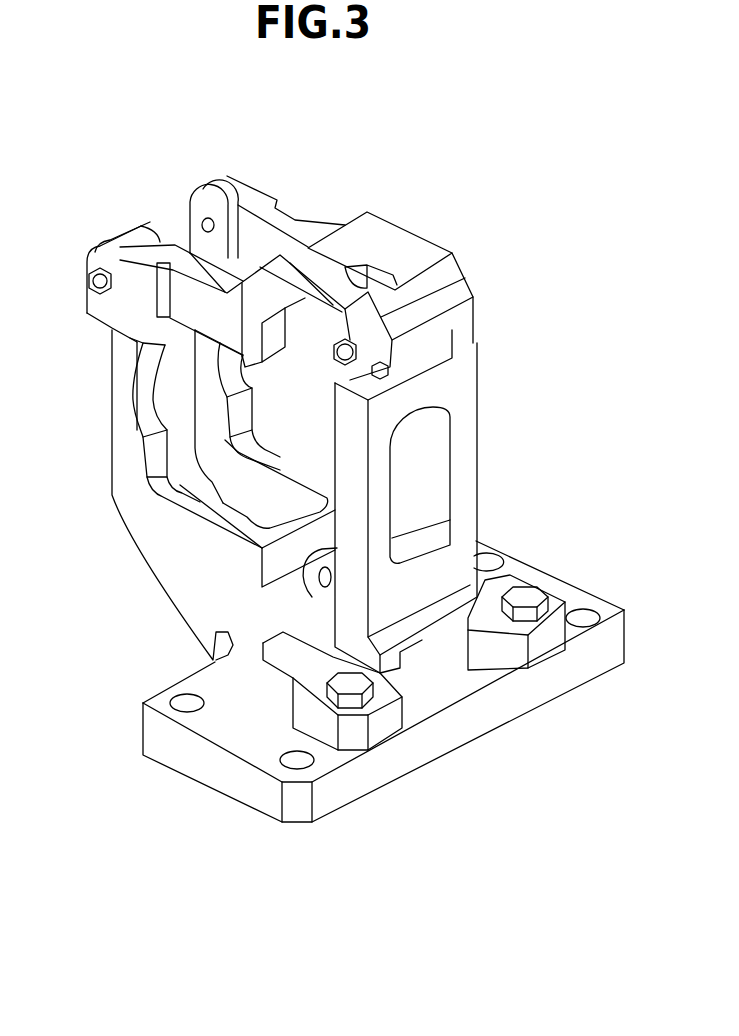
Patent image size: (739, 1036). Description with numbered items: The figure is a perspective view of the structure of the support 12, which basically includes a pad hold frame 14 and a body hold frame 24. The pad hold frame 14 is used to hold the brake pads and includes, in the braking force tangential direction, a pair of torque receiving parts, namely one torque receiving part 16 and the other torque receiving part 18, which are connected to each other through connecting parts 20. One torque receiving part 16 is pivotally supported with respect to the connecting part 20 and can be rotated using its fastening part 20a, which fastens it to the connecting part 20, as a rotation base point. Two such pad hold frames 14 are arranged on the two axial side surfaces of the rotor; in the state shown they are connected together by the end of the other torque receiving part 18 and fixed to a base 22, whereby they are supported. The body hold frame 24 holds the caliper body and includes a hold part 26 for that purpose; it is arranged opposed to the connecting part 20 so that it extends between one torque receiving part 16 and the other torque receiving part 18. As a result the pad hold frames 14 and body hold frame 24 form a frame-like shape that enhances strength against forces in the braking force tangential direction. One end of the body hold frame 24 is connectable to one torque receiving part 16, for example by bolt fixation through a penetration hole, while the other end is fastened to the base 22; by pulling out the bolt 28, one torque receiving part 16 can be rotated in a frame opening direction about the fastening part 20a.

The support 12 is at (402, 186).
The pad hold frame 14 is at (110, 495).
The one torque receiving part 16 is at (197, 291).
The other torque receiving part 18 is at (275, 486).
The connecting part 20 is at (123, 410).
The fastening part 20a is at (97, 281).
The base 22 is at (185, 762).
The body hold frame 24 is at (482, 430).
The hold part 26 is at (336, 352).
The bolt 28 is at (390, 370).